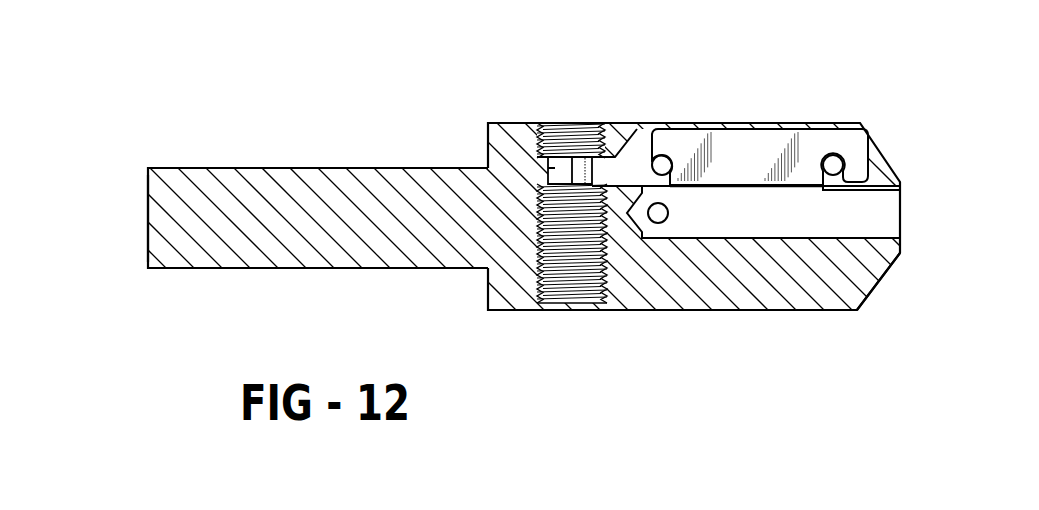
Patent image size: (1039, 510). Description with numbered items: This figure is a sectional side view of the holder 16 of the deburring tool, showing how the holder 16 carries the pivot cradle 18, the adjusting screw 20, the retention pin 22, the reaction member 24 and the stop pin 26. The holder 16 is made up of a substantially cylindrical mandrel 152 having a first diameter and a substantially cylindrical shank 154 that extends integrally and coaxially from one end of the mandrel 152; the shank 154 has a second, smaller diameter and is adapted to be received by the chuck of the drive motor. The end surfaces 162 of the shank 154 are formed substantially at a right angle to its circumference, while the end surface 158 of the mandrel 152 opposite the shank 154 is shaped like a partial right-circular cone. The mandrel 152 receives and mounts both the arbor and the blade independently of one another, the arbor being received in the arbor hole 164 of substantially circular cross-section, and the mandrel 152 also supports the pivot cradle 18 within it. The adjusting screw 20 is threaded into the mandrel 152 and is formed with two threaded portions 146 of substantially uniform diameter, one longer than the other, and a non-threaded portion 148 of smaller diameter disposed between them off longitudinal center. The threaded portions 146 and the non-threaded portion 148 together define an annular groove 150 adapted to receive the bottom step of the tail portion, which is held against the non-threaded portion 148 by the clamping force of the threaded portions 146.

The holder 16 is at (532, 101).
The pivot cradle 18 is at (749, 121).
The adjusting screw 20 is at (503, 208).
The retention pin 22 is at (844, 163).
The reaction member 24 is at (654, 155).
The stop pin 26 is at (658, 216).
The threaded portions 146 is at (537, 157).
The non-threaded portion 148 is at (540, 170).
The annular groove 150 is at (506, 226).
The mandrel 152 is at (746, 315).
The shank 154 is at (223, 166).
The end surface 158 is at (902, 255).
The end surfaces 162 is at (147, 182).
The arbor hole 164 is at (890, 207).